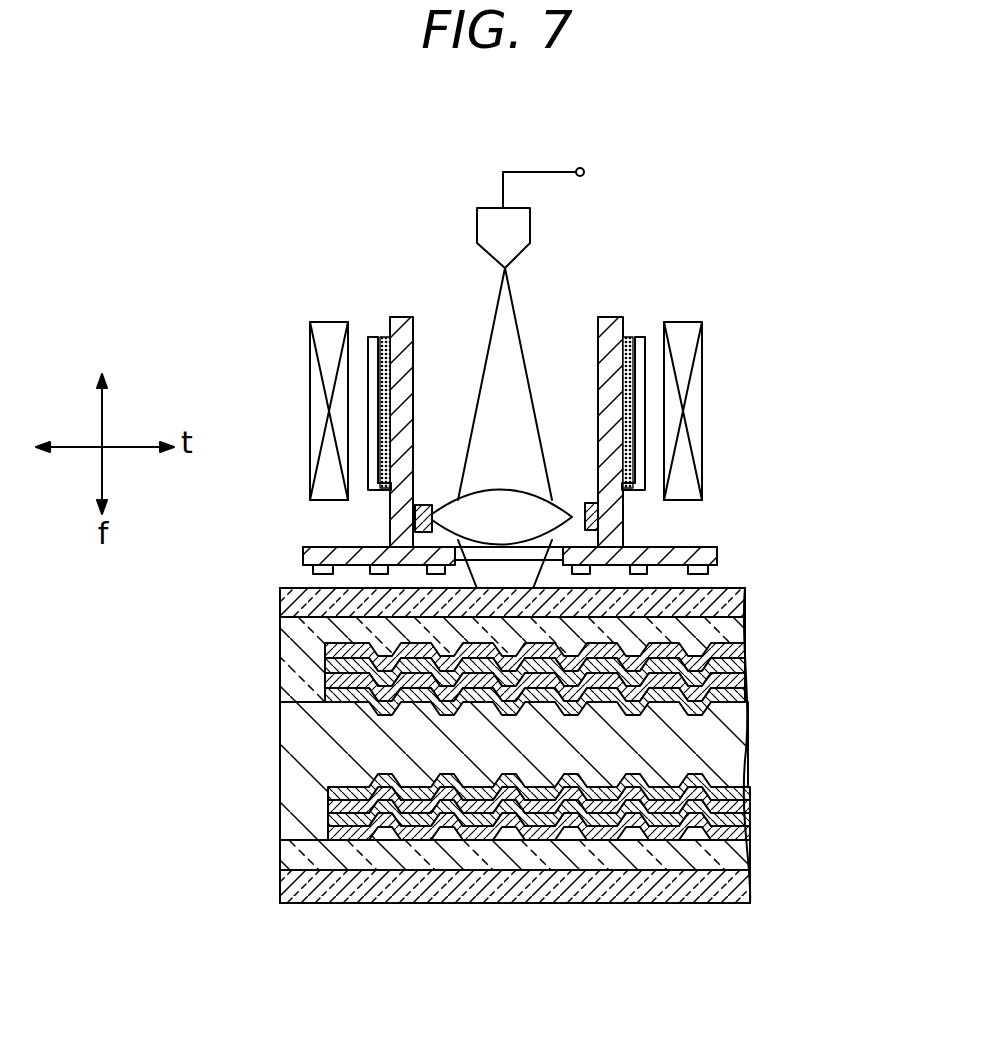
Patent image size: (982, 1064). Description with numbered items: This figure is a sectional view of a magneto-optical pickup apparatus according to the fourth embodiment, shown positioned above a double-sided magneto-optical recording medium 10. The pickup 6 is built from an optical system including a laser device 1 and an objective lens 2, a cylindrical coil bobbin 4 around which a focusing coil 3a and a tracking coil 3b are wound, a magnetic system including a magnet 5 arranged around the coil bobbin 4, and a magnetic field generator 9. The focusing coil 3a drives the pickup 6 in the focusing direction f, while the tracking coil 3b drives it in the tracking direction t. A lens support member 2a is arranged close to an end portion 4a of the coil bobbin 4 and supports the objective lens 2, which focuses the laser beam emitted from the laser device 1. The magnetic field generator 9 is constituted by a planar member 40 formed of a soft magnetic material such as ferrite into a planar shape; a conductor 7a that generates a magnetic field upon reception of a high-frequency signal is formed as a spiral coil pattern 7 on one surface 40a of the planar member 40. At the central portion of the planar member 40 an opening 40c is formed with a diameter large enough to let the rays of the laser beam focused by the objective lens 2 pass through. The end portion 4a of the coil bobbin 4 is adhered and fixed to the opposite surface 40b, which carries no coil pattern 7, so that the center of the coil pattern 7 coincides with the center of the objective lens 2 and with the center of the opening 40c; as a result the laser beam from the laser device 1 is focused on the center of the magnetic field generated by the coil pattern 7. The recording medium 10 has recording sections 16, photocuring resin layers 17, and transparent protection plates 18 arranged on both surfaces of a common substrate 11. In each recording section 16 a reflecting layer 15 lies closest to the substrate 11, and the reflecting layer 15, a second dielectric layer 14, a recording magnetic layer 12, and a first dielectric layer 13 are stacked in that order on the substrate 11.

The laser device 1 is at (487, 232).
The objective lens 2 is at (447, 504).
The lens support member 2a is at (417, 505).
The focusing coil 3a is at (385, 336).
The tracking coil 3b is at (373, 337).
The coil bobbin 4 is at (402, 318).
The end portion of the coil bobbin 4a is at (390, 544).
The magnet 5 is at (318, 395).
The pickup 6 is at (561, 308).
The spiral coil pattern 7 is at (738, 572).
The conductor 7a is at (306, 547).
The magnetic field generator 9 is at (750, 502).
The double-sided magneto-optical recording medium 10 is at (500, 747).
The substrate 11 is at (280, 750).
The recording magnetic layer 12 is at (745, 662).
The first dielectric layer 13 is at (745, 646).
The second dielectric layer 14 is at (745, 676).
The reflecting layer 15 is at (577, 744).
The recording section 16 is at (601, 735).
The photocuring resin layer 17 is at (280, 660).
The transparent protection plate 18 is at (280, 594).
The planar member 40 is at (510, 487).
The surface of the planar member 40a is at (318, 572).
The opposite surface of the planar member 40b is at (303, 552).
The opening 40c is at (462, 520).